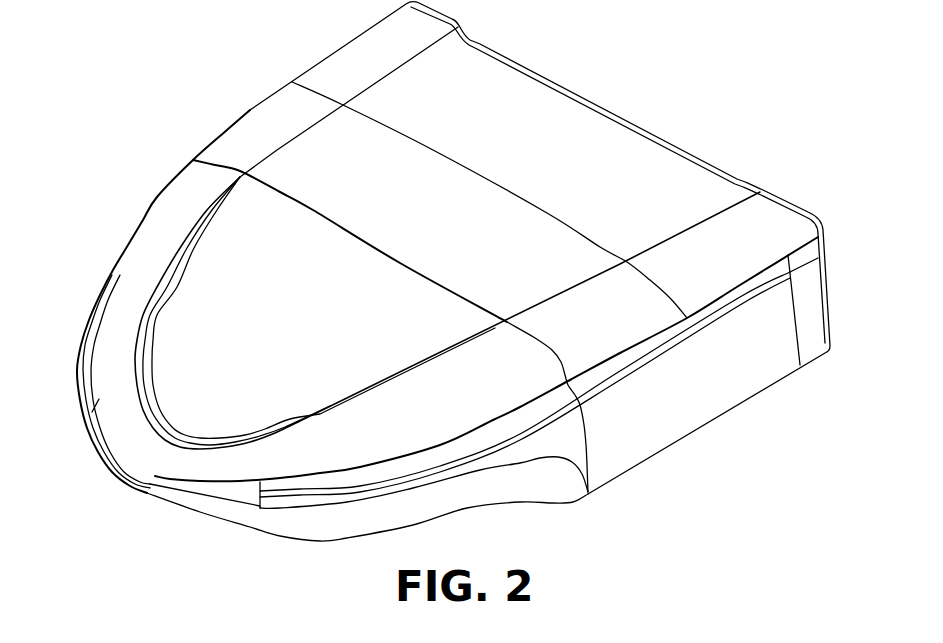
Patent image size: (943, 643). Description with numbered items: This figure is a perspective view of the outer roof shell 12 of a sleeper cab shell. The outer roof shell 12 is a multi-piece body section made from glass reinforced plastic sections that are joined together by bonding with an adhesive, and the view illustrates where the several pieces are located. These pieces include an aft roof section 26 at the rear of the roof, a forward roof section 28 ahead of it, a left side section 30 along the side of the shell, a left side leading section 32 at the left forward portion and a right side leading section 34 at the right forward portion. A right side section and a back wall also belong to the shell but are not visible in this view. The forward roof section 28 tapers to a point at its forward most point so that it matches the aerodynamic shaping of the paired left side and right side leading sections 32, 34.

The outer roof shell 12 is at (670, 60).
The aft roof section 26 is at (713, 200).
The forward roof section 28 is at (147, 235).
The left side section 30 is at (717, 415).
The left side leading section 32 is at (148, 492).
The right side leading section 34 is at (118, 473).